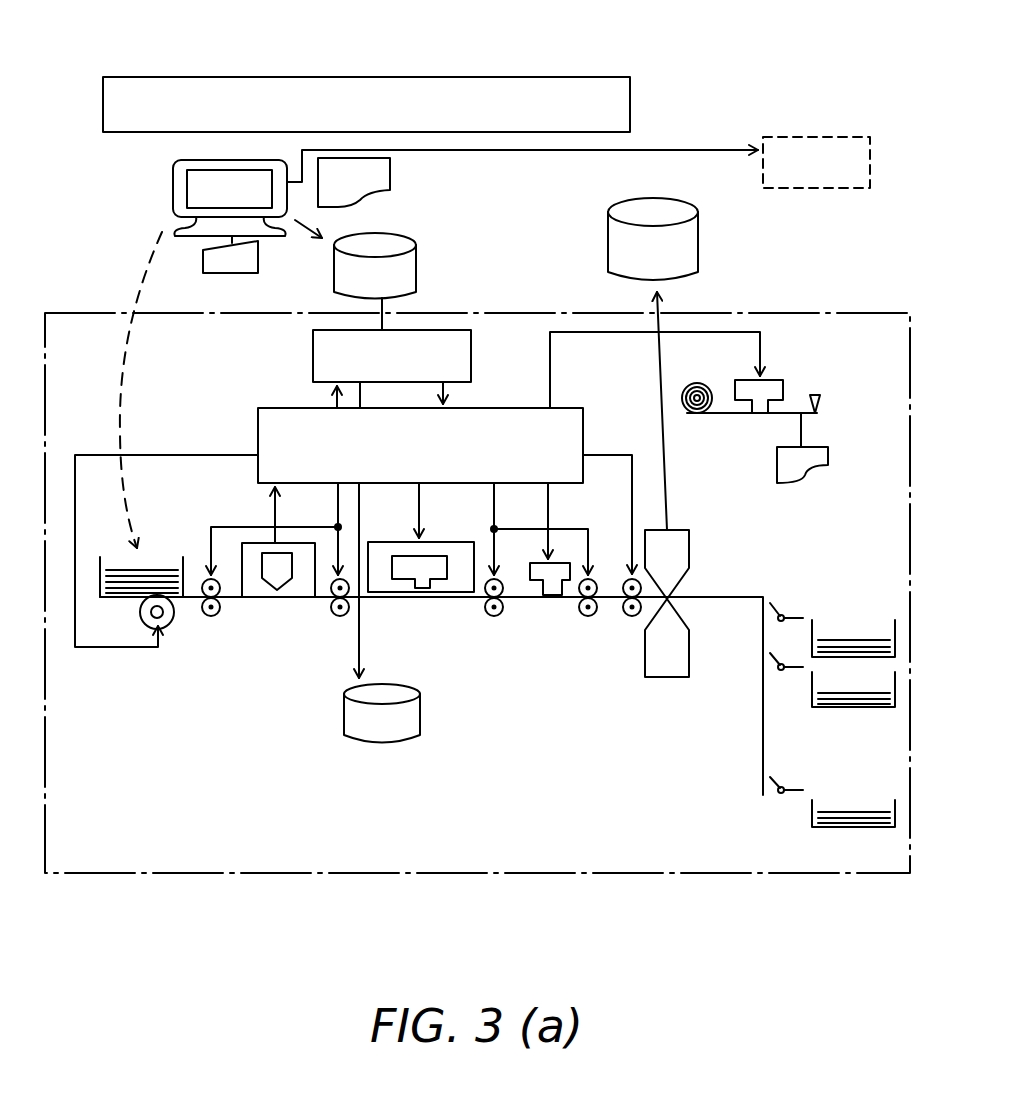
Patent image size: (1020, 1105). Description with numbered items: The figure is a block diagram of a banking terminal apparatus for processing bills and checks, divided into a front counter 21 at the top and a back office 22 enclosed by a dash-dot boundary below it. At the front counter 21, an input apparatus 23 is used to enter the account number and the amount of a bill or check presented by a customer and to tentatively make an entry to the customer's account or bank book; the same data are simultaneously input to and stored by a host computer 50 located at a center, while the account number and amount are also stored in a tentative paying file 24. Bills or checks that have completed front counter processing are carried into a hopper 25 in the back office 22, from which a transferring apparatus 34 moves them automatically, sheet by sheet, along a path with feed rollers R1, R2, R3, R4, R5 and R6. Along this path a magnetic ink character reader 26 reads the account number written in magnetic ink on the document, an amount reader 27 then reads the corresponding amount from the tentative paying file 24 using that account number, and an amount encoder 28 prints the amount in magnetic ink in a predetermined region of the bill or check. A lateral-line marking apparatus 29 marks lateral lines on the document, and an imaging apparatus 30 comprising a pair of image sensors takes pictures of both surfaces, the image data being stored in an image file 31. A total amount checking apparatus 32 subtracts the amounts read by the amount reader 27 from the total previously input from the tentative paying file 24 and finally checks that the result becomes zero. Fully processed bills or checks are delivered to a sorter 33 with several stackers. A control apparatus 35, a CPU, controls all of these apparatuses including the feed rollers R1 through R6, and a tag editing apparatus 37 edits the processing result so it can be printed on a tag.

The front counter 21 is at (178, 77).
The back office 22 is at (818, 313).
The input apparatus 23 is at (173, 185).
The tentative paying file 24 is at (416, 277).
The hopper 25 is at (168, 556).
The magnetic ink character reader 26 is at (262, 600).
The amount reader 27 is at (471, 366).
The amount encoder 28 is at (447, 540).
The lateral-line marking apparatus 29 is at (541, 597).
The imaging apparatus 30 is at (670, 680).
The image file 31 is at (698, 240).
The total amount checking apparatus 32 is at (386, 745).
The sorter 33 is at (893, 628).
The transferring apparatus 34 is at (397, 606).
The control apparatus 35 is at (285, 408).
The tag editing apparatus 37 is at (784, 396).
The host computer 50 is at (822, 137).
The feed roller R1 is at (172, 630).
The feed roller R2 is at (213, 617).
The feed roller R3 is at (337, 617).
The feed roller R4 is at (496, 617).
The feed roller R5 is at (587, 617).
The feed roller R6 is at (630, 617).